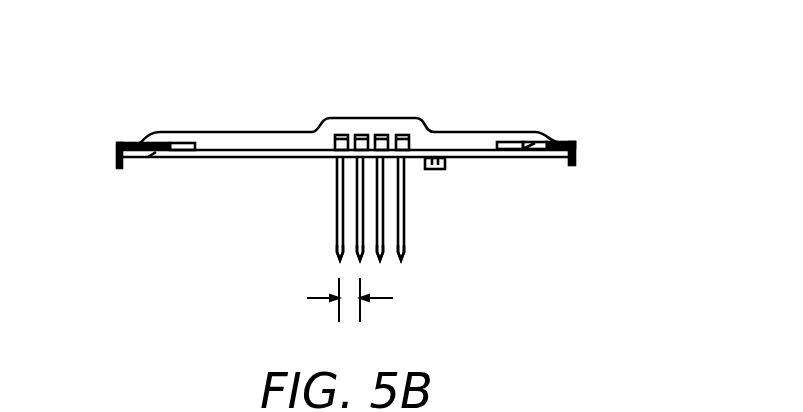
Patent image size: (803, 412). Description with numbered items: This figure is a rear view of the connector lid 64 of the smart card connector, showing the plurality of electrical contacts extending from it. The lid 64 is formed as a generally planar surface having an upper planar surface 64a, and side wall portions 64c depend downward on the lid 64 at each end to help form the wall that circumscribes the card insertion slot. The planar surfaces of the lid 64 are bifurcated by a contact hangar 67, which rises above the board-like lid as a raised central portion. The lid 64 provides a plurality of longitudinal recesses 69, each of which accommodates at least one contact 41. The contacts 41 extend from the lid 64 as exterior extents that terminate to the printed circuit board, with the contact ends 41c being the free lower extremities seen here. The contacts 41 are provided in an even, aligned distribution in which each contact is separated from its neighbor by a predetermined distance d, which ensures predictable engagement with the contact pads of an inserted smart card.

The lid 64 is at (505, 68).
The upper planar surface 64a is at (133, 143).
The side wall portions 64c is at (578, 153).
The contact hangar 67 is at (400, 118).
The longitudinal recesses 69 is at (362, 135).
The contacts 41 is at (360, 205).
The pin tips 41c is at (380, 218).
The predetermined distance d is at (363, 300).